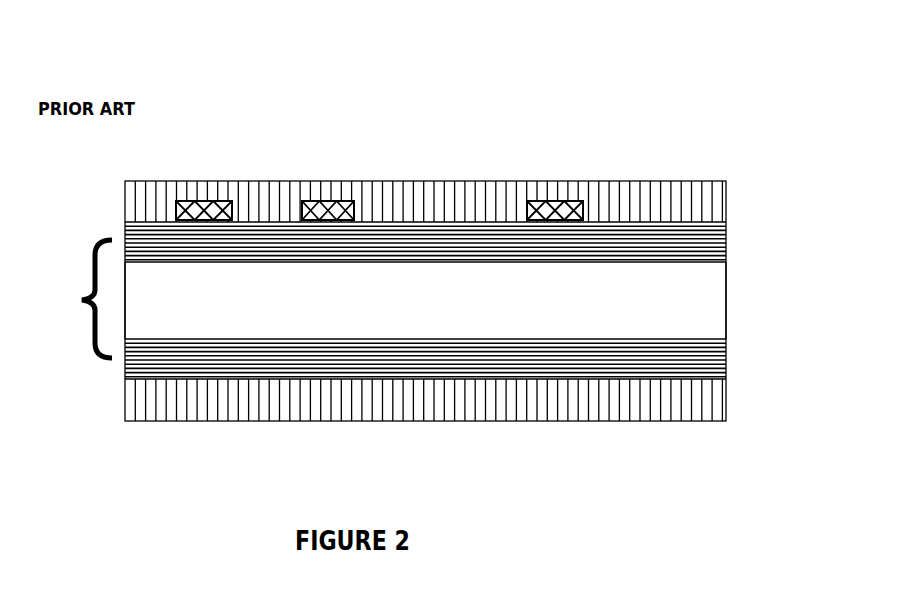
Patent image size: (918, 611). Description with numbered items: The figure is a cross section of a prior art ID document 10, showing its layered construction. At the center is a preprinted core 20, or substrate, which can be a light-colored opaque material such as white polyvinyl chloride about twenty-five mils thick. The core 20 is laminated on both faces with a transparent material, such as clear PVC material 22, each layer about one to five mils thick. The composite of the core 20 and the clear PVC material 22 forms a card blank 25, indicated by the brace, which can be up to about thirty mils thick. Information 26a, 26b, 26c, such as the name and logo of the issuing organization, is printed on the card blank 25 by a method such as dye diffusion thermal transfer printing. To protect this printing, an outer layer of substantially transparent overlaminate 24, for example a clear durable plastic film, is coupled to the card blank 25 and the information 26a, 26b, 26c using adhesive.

The ID document 10 is at (98, 197).
The preprinted core 20 is at (726, 298).
The clear PVC material 22 is at (726, 230).
The overlaminate 24 is at (667, 183).
The card blank 25 is at (74, 299).
The information 26a is at (208, 204).
The information 26b is at (335, 202).
The information 26c is at (557, 200).